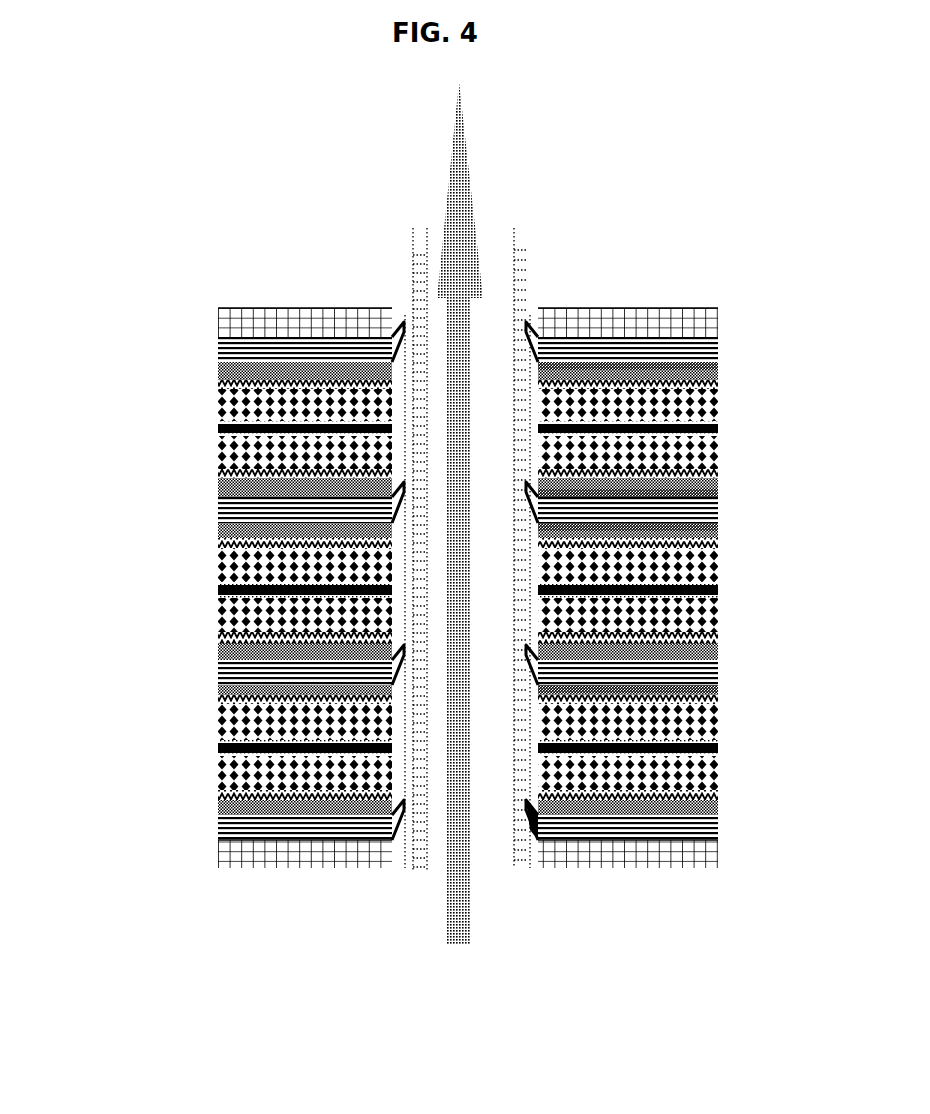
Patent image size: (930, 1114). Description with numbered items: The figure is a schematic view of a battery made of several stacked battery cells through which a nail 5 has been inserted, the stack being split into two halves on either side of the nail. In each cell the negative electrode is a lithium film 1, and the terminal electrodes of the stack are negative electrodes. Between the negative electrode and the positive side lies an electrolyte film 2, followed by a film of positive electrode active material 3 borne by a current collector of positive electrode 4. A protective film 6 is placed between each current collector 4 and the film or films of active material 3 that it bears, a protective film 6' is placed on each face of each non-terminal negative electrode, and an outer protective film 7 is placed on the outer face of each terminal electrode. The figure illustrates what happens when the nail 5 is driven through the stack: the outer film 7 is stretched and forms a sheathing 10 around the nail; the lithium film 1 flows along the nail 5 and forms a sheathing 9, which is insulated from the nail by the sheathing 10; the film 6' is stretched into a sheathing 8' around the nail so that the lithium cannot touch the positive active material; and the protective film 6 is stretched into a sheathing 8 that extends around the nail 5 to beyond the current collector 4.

The lithium film constituting a negative electrode 1 is at (718, 348).
The electrolyte film 2 is at (210, 543).
The film of positive electrode active material 3 is at (212, 405).
The current collector of positive electrode 4 is at (216, 430).
The nail 5 is at (442, 172).
The protective film for a positive electrode 6 is at (232, 555).
The protective film for a negative electrode 6' is at (672, 501).
The outer protective film 7 is at (272, 305).
The sheathing produced by stretching of a film 6 8 is at (256, 591).
The sheathing produced by stretching of a film 6' 8' is at (662, 591).
The sheathing produced by flow of a lithium film 1 9 is at (540, 820).
The sheathing formed by stretching of a film 7 10 is at (415, 297).